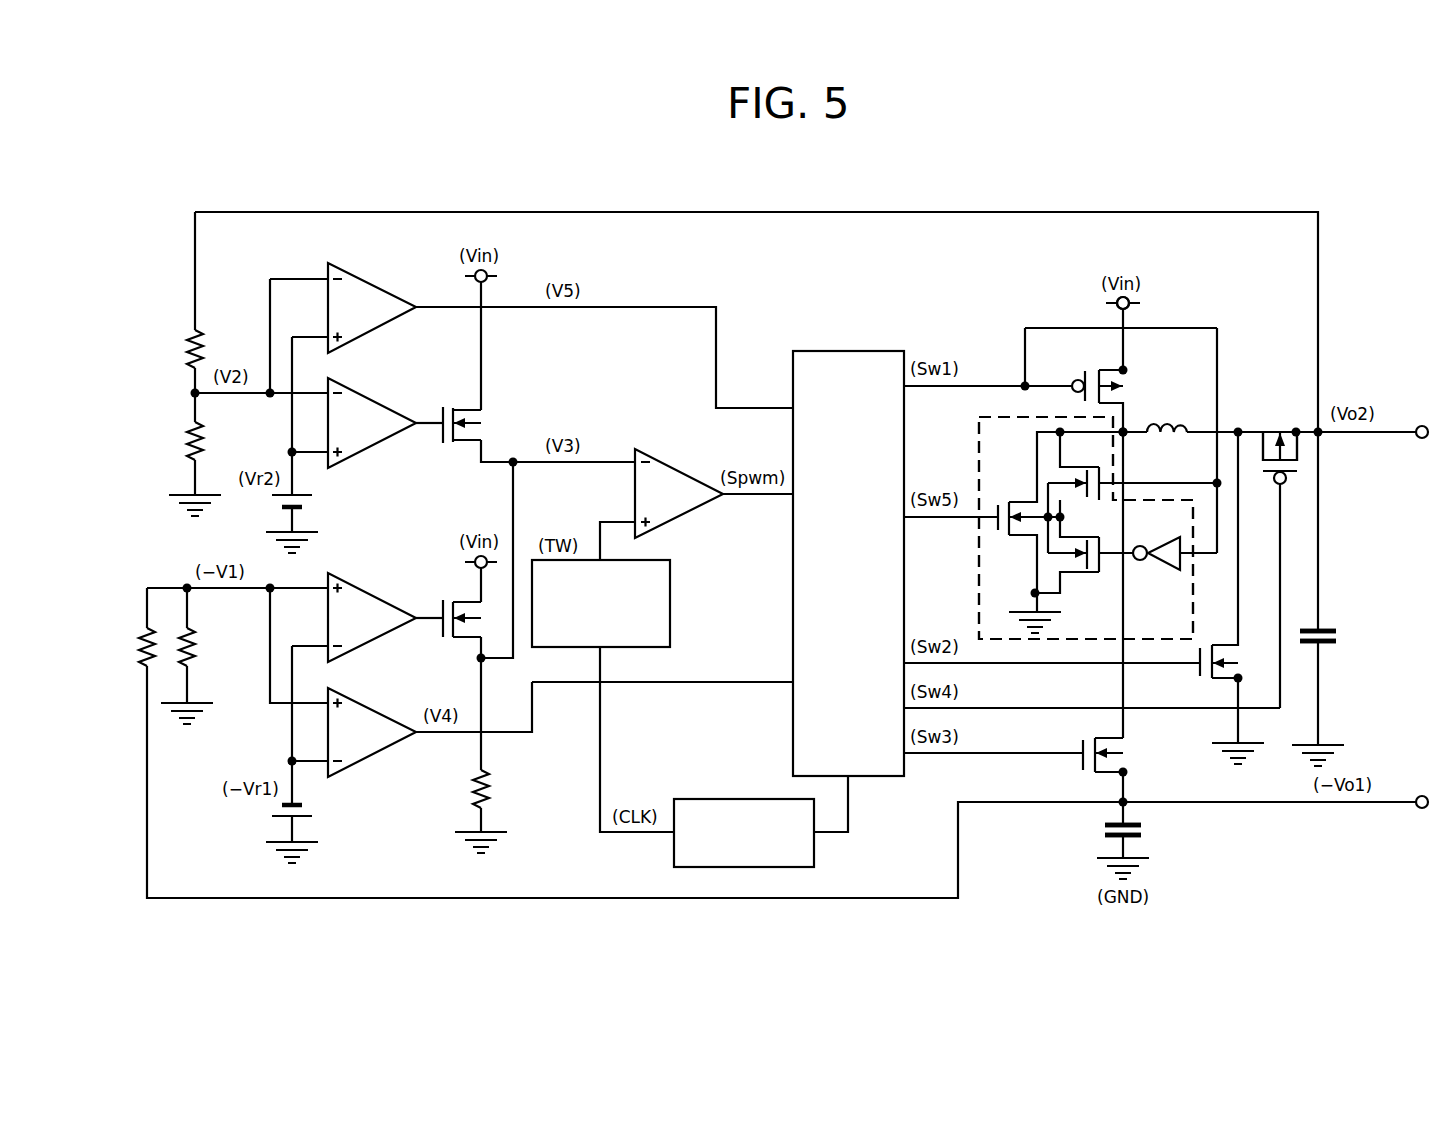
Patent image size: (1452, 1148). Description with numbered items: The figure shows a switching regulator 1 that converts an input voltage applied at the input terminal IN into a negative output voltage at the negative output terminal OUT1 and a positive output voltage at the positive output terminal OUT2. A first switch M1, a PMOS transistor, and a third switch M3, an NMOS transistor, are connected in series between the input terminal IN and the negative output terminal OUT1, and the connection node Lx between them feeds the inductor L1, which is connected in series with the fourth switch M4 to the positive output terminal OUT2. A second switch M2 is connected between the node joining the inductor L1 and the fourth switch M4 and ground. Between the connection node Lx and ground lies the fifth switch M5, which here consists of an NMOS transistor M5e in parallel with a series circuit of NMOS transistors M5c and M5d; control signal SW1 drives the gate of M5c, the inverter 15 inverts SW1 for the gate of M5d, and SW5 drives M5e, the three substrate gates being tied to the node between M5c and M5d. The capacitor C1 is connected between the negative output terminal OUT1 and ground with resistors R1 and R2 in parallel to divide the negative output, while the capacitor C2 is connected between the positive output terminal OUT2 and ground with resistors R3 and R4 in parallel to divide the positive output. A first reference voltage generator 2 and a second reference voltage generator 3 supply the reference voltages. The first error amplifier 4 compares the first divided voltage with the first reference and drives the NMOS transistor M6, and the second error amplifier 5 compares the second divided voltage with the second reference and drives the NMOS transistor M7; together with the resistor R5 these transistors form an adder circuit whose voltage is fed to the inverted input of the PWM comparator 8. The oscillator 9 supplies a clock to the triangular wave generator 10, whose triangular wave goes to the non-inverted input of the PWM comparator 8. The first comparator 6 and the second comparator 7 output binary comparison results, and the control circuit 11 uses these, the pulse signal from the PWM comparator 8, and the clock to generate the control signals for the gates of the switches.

The switching regulator 1 is at (978, 198).
The first reference voltage generator 2 is at (266, 811).
The second reference voltage generator 3 is at (268, 505).
The first error amplifier 4 is at (378, 597).
The second error amplifier 5 is at (378, 402).
The first comparator 6 is at (378, 712).
The second comparator 7 is at (378, 286).
The PWM comparator 8 is at (669, 463).
The oscillator 9 is at (691, 800).
The triangular wave generator 10 is at (671, 588).
The control circuit 11 is at (872, 352).
The inverter 15 is at (1165, 571).
The first switch M1 is at (1097, 372).
The second switch M2 is at (1219, 649).
The third switch M3 is at (1119, 755).
The fourth switch M4 is at (1280, 444).
The fifth switch M5 is at (979, 567).
The NMOS transistor M5c is at (1074, 472).
The NMOS transistor M5d is at (1075, 570).
The NMOS transistor M5e is at (1024, 505).
The NMOS transistor M6 is at (460, 606).
The NMOS transistor M7 is at (460, 413).
The resistor R1 is at (131, 647).
The resistor R2 is at (202, 647).
The resistor R3 is at (178, 349).
The resistor R4 is at (178, 441).
The resistor R5 is at (498, 789).
The inductor L1 is at (1167, 414).
The connection node Lx is at (1128, 437).
The capacitor C1 is at (1137, 828).
The capacitor C2 is at (1331, 636).
The input terminal IN is at (1133, 309).
The negative output terminal OUT1 is at (1423, 791).
The positive output terminal OUT2 is at (1421, 421).